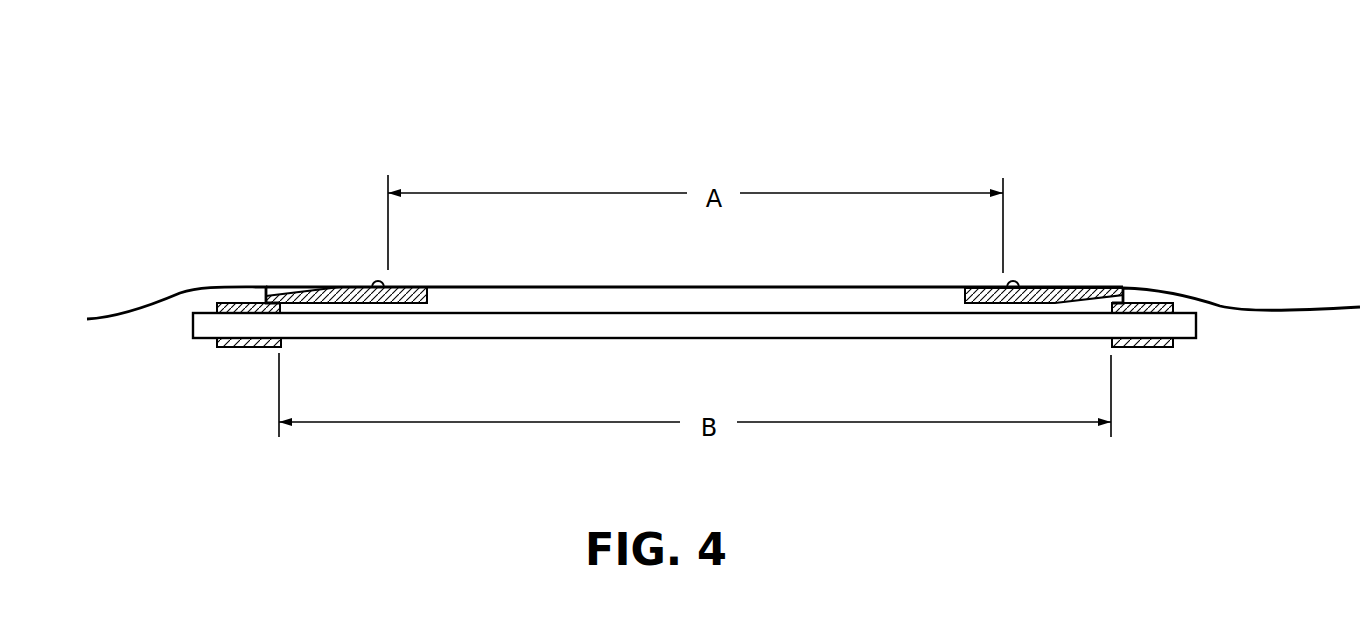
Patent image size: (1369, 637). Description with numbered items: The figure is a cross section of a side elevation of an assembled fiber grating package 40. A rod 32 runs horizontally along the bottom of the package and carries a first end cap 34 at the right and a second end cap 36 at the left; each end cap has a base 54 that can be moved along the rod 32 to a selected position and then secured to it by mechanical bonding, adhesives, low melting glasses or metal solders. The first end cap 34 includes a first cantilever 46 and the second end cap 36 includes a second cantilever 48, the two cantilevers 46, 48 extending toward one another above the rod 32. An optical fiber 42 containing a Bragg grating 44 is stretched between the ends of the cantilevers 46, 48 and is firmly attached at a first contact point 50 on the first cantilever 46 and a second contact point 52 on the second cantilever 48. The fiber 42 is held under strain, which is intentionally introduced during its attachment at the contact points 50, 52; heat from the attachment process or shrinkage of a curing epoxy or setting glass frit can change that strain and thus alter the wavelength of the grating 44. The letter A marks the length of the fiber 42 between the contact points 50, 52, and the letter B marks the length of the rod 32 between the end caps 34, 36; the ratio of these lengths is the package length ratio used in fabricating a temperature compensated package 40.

The rod 32 is at (967, 340).
The first end cap 34 is at (1144, 280).
The second end cap 36 is at (296, 280).
The fiber grating package 40 is at (1113, 109).
The optical fiber 42 is at (903, 287).
The Bragg grating 44 is at (633, 287).
The first cantilever 46 is at (1055, 288).
The second cantilever 48 is at (346, 291).
The first contact point 50 is at (1013, 281).
The second contact point 52 is at (378, 281).
The end cap base 54 is at (1140, 348).